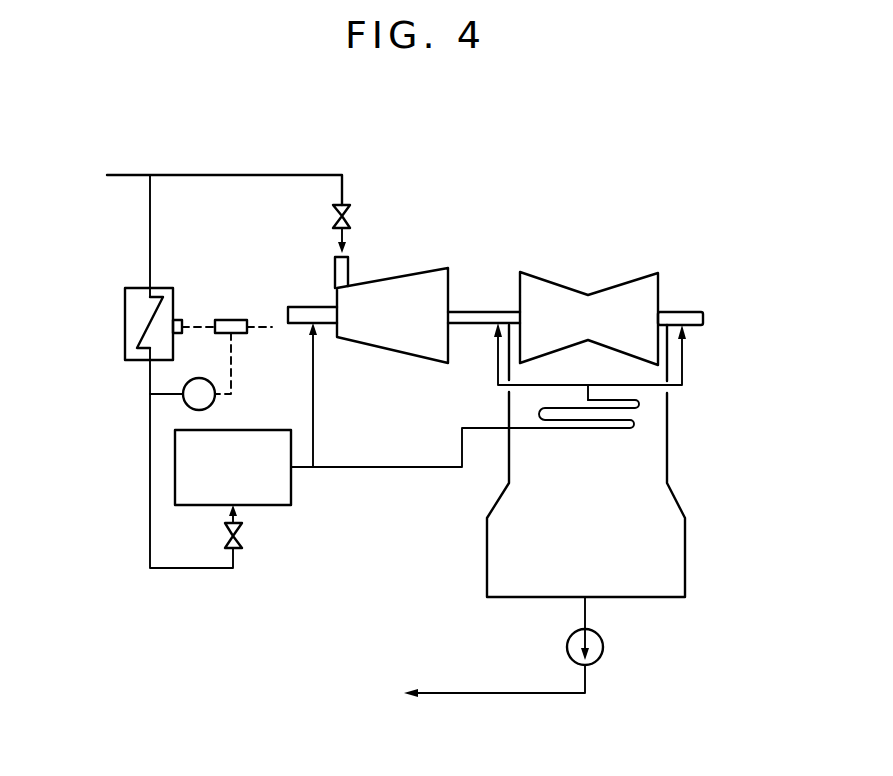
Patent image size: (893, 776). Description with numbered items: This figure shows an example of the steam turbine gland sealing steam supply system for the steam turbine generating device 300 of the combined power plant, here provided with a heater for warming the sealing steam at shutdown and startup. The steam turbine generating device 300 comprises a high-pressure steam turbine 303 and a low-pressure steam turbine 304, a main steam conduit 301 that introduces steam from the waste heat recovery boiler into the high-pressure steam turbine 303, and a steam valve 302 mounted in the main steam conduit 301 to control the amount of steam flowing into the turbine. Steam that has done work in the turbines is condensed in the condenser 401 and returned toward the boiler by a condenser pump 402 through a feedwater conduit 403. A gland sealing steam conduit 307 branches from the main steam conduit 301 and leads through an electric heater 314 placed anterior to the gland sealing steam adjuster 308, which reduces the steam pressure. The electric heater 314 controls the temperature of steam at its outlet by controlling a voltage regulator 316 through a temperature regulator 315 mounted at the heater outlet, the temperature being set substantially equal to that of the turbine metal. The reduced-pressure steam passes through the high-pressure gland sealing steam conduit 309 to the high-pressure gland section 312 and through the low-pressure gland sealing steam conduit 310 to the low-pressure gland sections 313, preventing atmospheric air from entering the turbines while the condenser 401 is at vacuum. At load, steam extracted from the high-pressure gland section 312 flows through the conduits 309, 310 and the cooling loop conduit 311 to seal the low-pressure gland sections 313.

The steam turbine generating device 300 is at (497, 283).
The main steam conduit 301 is at (221, 166).
The steam valve 302 is at (367, 234).
The high-pressure steam turbine 303 is at (392, 300).
The low-pressure steam turbine 304 is at (589, 305).
The gland sealing steam conduit 307 is at (120, 236).
The gland sealing steam adjuster 308 is at (262, 473).
The high-pressure gland sealing steam conduit 309 is at (339, 395).
The low-pressure gland sealing steam conduit 310 is at (513, 421).
The cooling loop conduit 311 is at (584, 440).
The high-pressure gland section 312 is at (310, 296).
The low-pressure gland sections 313 is at (584, 296).
The electric heater 314 is at (170, 306).
The temperature regulator 315 is at (187, 376).
The voltage regulator 316 is at (227, 336).
The condenser 401 is at (590, 486).
The condenser pump 402 is at (613, 643).
The feedwater conduit 403 is at (494, 702).